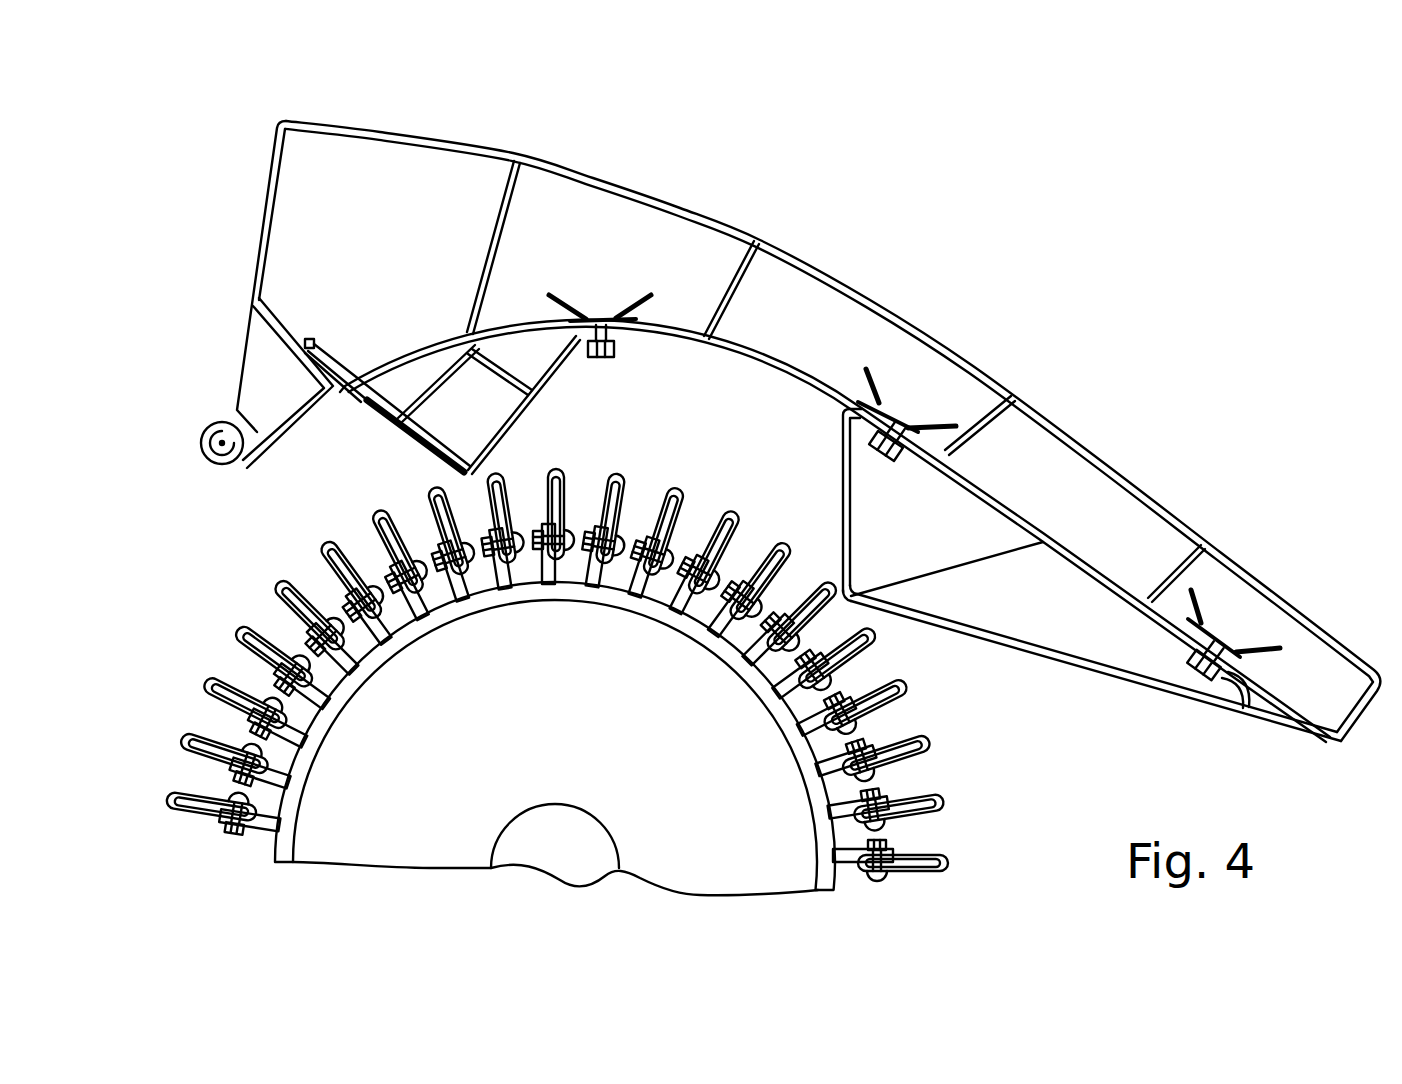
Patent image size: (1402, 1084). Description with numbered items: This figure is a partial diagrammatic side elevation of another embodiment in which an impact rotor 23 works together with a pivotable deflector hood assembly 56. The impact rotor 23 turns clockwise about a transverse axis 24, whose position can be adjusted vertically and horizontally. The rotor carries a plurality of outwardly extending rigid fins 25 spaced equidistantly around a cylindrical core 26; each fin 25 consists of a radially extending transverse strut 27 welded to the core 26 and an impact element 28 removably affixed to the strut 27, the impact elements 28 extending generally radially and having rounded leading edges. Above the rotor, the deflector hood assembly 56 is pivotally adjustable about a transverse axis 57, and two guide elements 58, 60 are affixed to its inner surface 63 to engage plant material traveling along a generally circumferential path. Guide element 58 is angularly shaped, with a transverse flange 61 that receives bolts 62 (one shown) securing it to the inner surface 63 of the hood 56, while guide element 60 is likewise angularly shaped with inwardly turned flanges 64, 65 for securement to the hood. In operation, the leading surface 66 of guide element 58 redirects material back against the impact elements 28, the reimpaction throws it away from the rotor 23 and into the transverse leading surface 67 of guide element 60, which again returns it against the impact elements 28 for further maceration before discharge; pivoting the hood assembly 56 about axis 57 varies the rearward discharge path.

The impact rotor 23 is at (683, 677).
The transverse axis 24 is at (548, 820).
The rigid fins 25 is at (195, 830).
The cylindrical core 26 is at (690, 622).
The transverse strut 27 is at (372, 628).
The impact element 28 is at (605, 475).
The deflector hood assembly 56 is at (688, 148).
The transverse axis 57 is at (220, 440).
The guide element 58 is at (490, 436).
The guide element 60 is at (855, 514).
The transverse flange 61 is at (622, 352).
The bolts 62 is at (602, 358).
The inner surface 63 is at (763, 352).
The inwardly turned flange 64 is at (862, 404).
The inwardly turned flange 65 is at (1180, 627).
The leading surface 66 is at (425, 456).
The transverse leading surface 67 is at (843, 500).